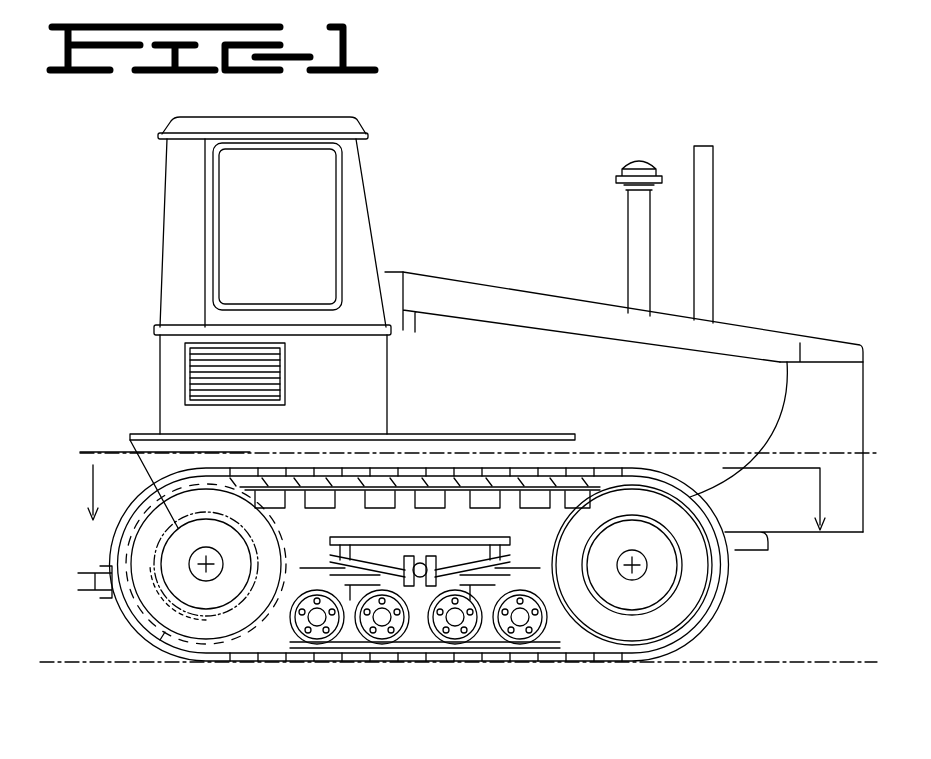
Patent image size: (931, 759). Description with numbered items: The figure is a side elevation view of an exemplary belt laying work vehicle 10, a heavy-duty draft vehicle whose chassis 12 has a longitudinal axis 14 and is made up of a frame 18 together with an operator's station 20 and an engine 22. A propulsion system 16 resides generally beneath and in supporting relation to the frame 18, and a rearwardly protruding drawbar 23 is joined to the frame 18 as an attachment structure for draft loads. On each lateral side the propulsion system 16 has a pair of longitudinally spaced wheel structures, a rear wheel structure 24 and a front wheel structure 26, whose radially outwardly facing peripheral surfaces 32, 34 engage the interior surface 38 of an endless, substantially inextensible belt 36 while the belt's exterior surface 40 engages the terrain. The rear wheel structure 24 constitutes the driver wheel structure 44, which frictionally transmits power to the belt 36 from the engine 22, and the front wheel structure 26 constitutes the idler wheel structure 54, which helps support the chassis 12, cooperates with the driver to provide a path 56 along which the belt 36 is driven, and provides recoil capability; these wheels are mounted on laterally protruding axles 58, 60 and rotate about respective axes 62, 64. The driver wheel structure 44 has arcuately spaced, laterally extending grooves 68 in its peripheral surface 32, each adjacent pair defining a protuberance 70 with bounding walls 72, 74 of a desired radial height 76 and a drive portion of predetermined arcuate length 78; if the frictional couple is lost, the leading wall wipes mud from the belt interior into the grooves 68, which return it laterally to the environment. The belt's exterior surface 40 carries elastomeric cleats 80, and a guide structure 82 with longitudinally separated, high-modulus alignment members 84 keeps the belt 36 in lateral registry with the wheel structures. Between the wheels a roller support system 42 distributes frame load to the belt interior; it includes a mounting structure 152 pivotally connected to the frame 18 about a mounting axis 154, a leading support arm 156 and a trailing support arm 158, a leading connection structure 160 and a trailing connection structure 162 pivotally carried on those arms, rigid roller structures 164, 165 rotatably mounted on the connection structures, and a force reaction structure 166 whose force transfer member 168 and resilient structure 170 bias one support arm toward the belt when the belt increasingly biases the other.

The belt laying work vehicle 10 is at (770, 256).
The chassis 12 is at (838, 365).
The longitudinal axis 14 is at (128, 444).
The propulsion system 16 is at (738, 612).
The frame 18 is at (849, 520).
The operator's station 20 is at (362, 185).
The engine 22 is at (632, 403).
The drawbar 23 is at (66, 586).
The rear wheel structure 24 is at (95, 562).
The front wheel structure 26 is at (688, 650).
The outer peripheral surface 32 is at (305, 498).
The outer peripheral surface 34 is at (569, 586).
The endless belt 36 is at (706, 626).
The interior surface 38 is at (448, 495).
The exterior surface 40 is at (128, 601).
The roller support system 42 is at (425, 660).
The driver wheel structure 44 is at (148, 626).
The idler wheel structure 54 is at (605, 645).
The path 56 is at (160, 640).
The axle 58 is at (214, 580).
The axle 60 is at (652, 562).
The axis 62 is at (200, 560).
The axis 64 is at (645, 572).
The grooves 68 is at (240, 650).
The protuberance 70 is at (205, 560).
The bounding wall 72 is at (236, 498).
The bounding wall 74 is at (265, 498).
The radial height 76 is at (294, 542).
The arcuate length 78 is at (222, 498).
The cleats 80 is at (655, 655).
The guide structure 82 is at (572, 598).
The alignment members 84 is at (268, 660).
The mounting structure 152 is at (340, 562).
The mounting axis 154 is at (440, 565).
The leading support arm 156 is at (455, 645).
The trailing support arm 158 is at (392, 660).
The leading connection structure 160 is at (515, 640).
The trailing connection structure 162 is at (378, 640).
The roller structures 164 is at (480, 640).
The roller structures 165 is at (340, 640).
The force reaction structure 166 is at (486, 500).
The force transfer member 168 is at (418, 500).
The resilient structure 170 is at (340, 560).